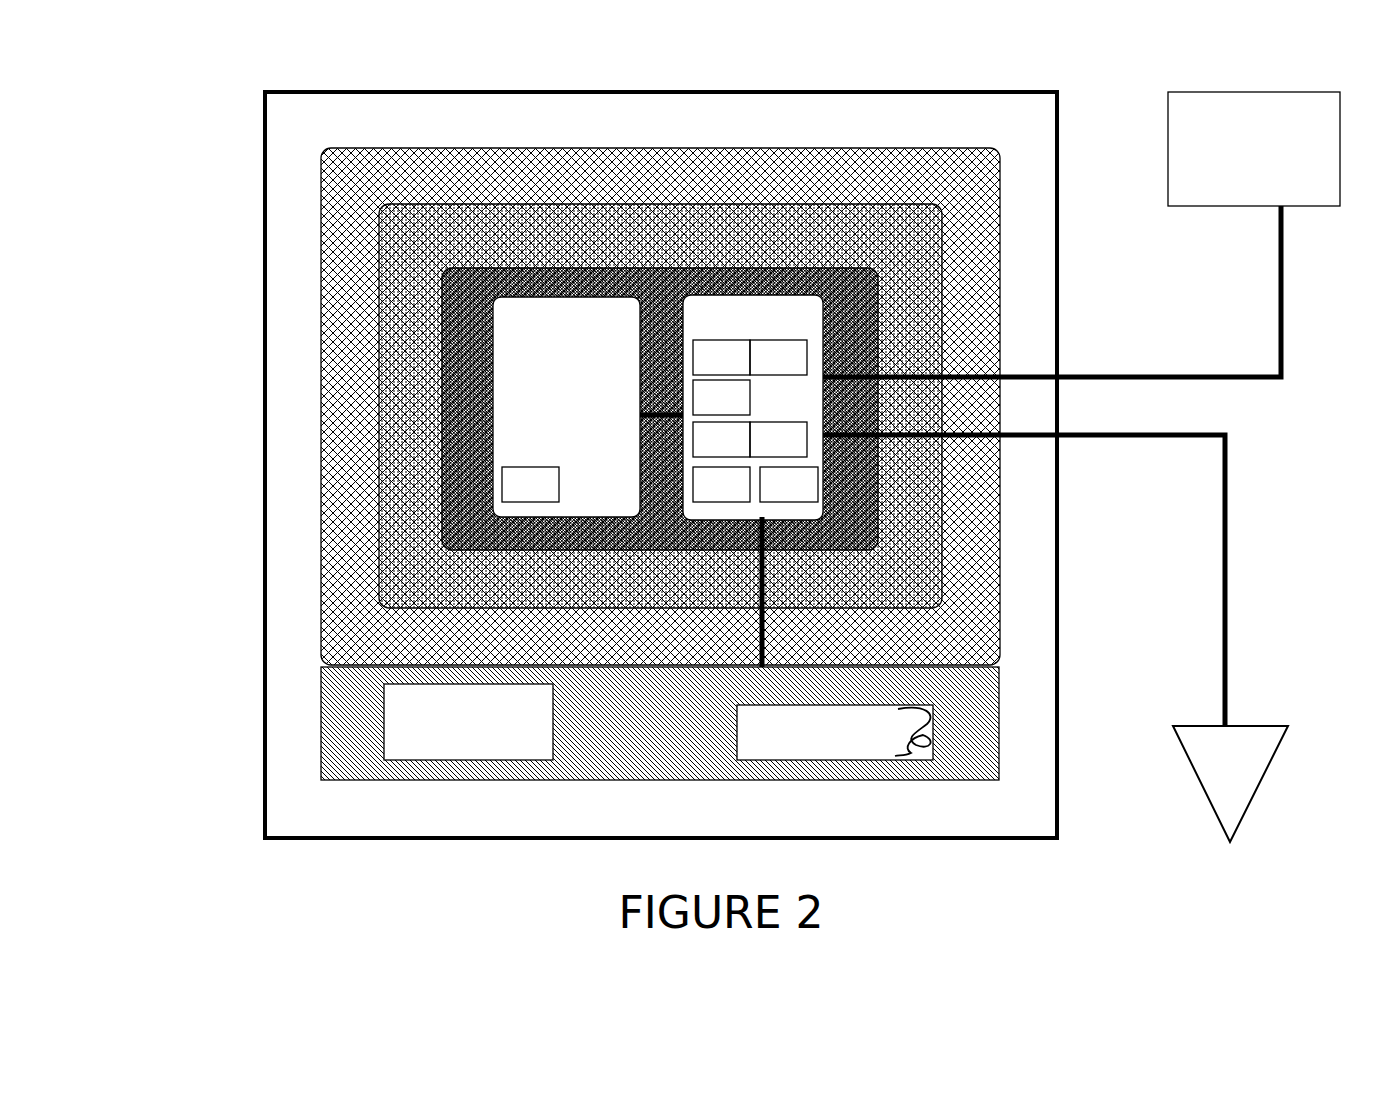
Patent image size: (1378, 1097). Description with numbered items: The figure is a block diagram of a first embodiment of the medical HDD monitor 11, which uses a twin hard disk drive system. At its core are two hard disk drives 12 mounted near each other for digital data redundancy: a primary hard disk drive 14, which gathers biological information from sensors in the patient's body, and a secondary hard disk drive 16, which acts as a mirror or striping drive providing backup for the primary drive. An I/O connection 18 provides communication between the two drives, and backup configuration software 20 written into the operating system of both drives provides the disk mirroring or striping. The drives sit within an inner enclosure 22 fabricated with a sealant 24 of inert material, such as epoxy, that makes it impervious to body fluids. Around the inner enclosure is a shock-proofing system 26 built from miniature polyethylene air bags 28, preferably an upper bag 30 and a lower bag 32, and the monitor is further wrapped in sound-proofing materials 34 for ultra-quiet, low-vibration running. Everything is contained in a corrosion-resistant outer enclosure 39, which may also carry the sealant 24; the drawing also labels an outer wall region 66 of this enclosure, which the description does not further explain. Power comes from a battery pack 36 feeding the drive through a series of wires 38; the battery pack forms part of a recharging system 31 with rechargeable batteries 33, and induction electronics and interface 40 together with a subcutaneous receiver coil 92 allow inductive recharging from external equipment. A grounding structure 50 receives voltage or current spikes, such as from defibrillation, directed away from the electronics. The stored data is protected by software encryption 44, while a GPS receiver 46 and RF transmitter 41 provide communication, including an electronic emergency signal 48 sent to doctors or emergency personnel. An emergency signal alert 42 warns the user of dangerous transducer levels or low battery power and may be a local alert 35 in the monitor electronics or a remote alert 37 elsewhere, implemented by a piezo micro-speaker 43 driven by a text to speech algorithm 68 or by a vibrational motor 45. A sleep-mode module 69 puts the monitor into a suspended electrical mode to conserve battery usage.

The medical HDD monitor 11 is at (708, 484).
The hard disk drives 12 is at (442, 340).
The primary hard disk drive 14 is at (707, 334).
The secondary hard disk drive 16 is at (521, 334).
The I/O connection 18 is at (662, 408).
The backup configuration software 20 is at (516, 498).
The inner enclosure 22 is at (532, 409).
The sealant 24 is at (601, 465).
The shock-proofing system 26 is at (545, 406).
The miniature polyethylene air bags 28 is at (545, 406).
The upper bag 30 is at (545, 406).
The lower bag 32 is at (412, 495).
The sound-proofing materials 34 is at (345, 210).
The local alert 35 is at (432, 719).
The battery pack 36 is at (554, 731).
The remote alert 37 is at (1214, 144).
The wires 38 is at (760, 566).
The outer enclosure 39 is at (601, 465).
The induction electronics and interface 40 is at (818, 746).
The RF transmitter 41 is at (707, 411).
The emergency signal alert 42 is at (862, 426).
The piezo micro-speaker 43 is at (862, 426).
The software encryption 44 is at (775, 498).
The vibrational motor 45 is at (862, 426).
The GPS receiver 46 is at (707, 371).
The electronic emergency signal 48 is at (765, 371).
The grounding structure 50 is at (1213, 799).
The outer housing wall 66 is at (463, 297).
The text to speech algorithm 68 is at (707, 453).
The sleep-mode module 69 is at (765, 453).
The subcutaneous receiver coil 92 is at (900, 766).
The recharging system 31 is at (554, 731).
The rechargeable batteries 33 is at (320, 715).